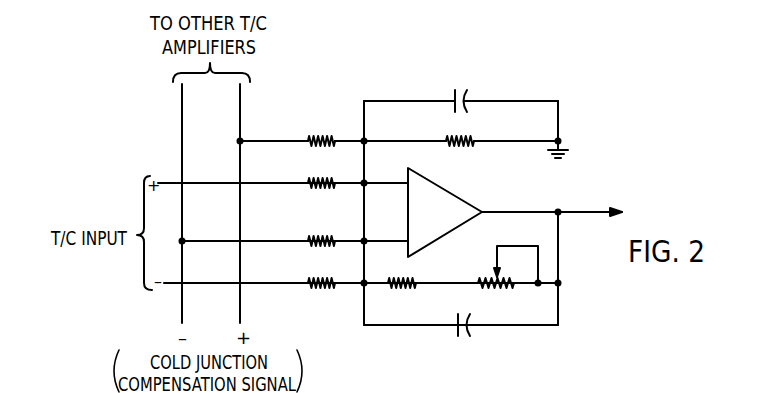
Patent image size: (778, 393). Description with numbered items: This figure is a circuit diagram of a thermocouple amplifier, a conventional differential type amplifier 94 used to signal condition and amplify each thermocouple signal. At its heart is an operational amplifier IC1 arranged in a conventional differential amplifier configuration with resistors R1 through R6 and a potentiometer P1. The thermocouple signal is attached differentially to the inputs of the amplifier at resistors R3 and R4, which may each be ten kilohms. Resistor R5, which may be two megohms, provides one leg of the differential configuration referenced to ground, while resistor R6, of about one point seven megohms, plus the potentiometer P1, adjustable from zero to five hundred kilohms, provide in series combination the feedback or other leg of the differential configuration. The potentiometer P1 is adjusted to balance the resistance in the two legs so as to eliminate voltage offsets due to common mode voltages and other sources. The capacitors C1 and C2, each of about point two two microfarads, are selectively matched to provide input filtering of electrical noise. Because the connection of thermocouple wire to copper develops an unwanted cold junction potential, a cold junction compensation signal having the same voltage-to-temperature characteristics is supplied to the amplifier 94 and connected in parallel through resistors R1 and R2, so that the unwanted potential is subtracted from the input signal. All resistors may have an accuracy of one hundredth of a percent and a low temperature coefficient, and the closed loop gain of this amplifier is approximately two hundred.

The resistor R1 is at (324, 134).
The resistor R2 is at (324, 234).
The resistor R3 is at (323, 176).
The resistor R4 is at (324, 276).
The resistor R5 is at (464, 134).
The resistor R6 is at (404, 277).
The potentiometer P1 is at (490, 270).
The capacitor C1 is at (460, 88).
The capacitor C2 is at (475, 304).
The operational amplifier IC1 is at (440, 192).
The differential type amplifier 94 is at (603, 111).